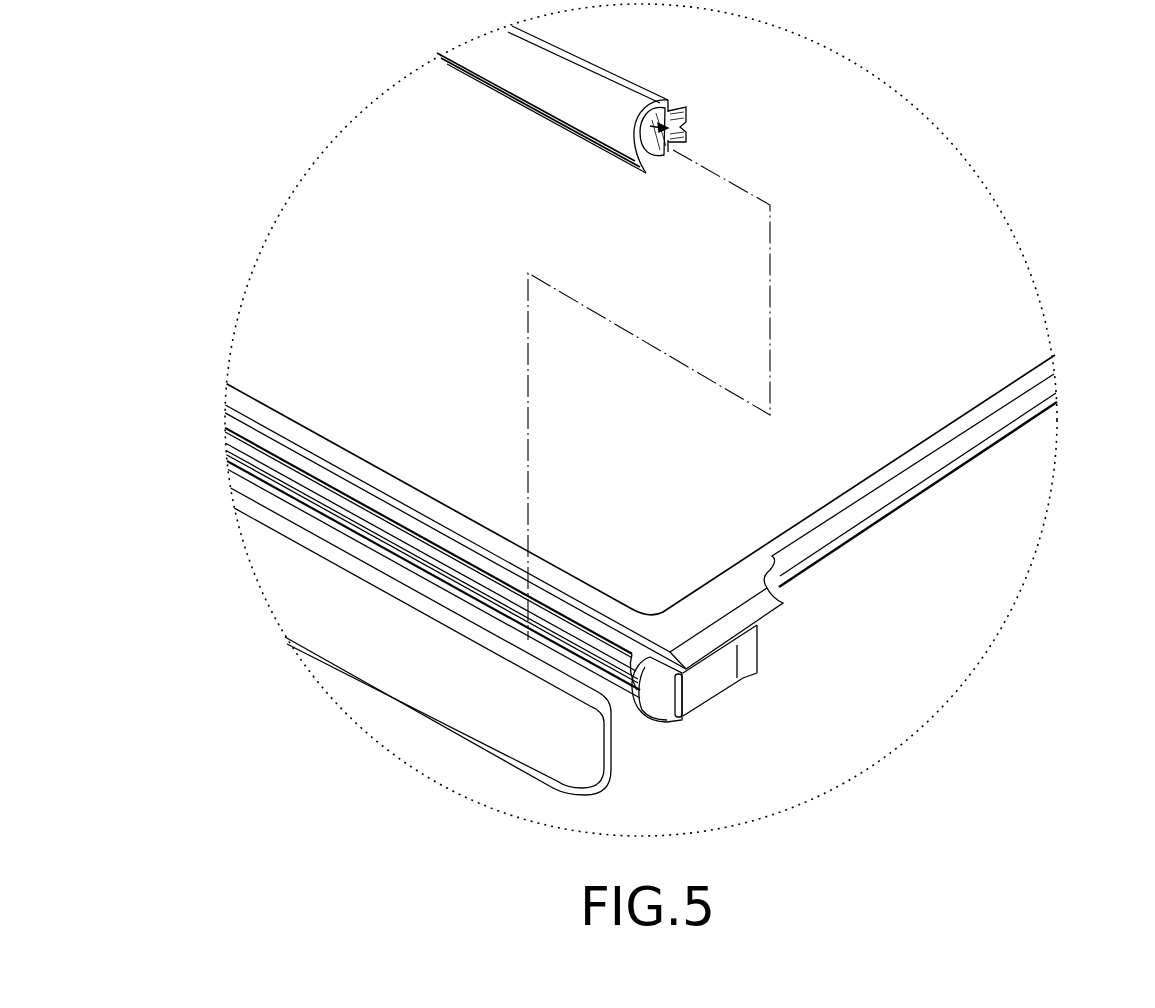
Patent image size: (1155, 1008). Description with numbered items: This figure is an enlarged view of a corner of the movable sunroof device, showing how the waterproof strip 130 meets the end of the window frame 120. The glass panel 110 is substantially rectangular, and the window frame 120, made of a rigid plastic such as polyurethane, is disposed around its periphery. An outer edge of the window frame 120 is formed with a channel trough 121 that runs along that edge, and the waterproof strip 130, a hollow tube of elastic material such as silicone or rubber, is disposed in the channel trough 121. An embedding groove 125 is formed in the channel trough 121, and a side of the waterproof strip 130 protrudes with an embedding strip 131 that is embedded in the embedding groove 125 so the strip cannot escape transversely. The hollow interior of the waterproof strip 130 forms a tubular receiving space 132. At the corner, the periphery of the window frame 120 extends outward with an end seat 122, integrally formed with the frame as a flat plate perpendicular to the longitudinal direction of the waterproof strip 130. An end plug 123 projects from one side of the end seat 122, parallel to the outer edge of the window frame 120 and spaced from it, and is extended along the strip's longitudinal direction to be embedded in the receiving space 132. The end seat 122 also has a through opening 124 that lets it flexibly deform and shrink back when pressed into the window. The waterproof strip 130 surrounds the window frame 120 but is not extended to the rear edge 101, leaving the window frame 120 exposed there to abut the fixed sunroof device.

The rear edge 101 is at (903, 511).
The glass panel 110 is at (830, 102).
The window frame 120 is at (987, 428).
The channel trough 121 is at (352, 540).
The end seat 122 is at (663, 712).
The end plug 123 is at (612, 697).
The through opening 124 is at (677, 692).
The embedding groove 125 is at (513, 598).
The waterproof strip 130 is at (502, 66).
The embedding strip 131 is at (688, 123).
The receiving space 132 is at (690, 134).